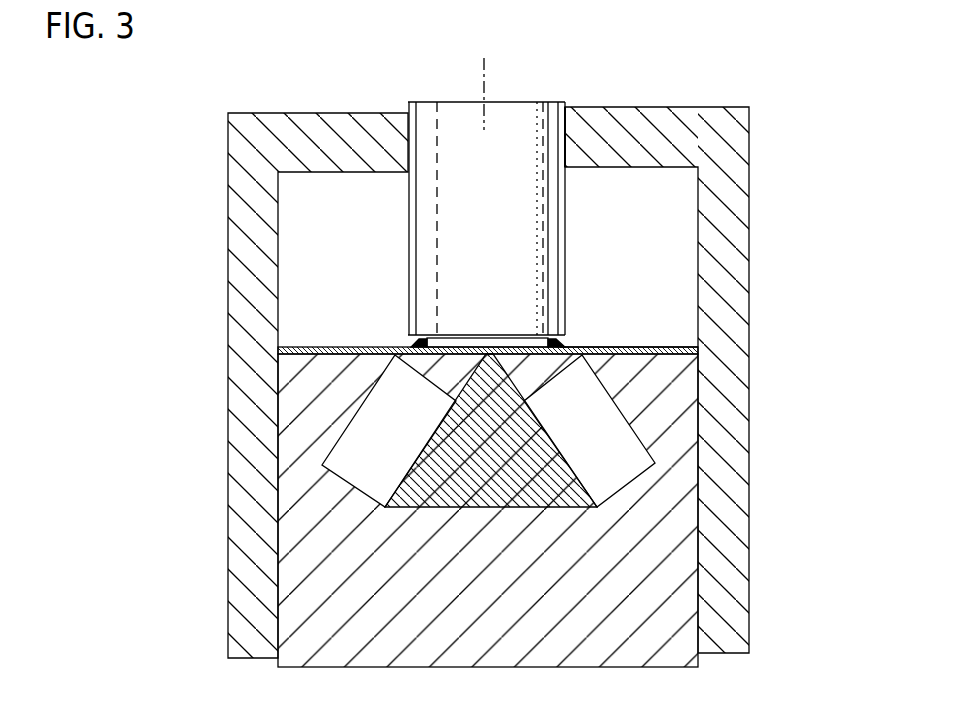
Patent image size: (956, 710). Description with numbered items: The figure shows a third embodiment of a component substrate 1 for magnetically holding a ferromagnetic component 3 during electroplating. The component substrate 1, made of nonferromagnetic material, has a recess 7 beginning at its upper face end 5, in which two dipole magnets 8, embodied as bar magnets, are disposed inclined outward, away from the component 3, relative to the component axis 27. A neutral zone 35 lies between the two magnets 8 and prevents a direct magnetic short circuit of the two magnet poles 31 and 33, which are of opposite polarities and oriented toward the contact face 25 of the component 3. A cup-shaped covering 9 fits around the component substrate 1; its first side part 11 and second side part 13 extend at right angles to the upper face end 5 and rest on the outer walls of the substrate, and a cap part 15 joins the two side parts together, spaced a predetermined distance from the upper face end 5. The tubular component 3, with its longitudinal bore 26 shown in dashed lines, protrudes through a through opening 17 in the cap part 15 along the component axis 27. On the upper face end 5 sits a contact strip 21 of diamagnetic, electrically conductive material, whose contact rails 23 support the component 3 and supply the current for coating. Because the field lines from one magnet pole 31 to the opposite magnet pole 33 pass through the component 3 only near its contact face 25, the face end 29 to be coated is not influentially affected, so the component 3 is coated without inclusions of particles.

The component substrate 1 is at (270, 548).
The component 3 is at (507, 192).
The upper face end 5 is at (645, 340).
The recess 7 is at (626, 432).
The magnet 8 is at (497, 430).
The covering 9 is at (479, 361).
The first side part 11 is at (243, 475).
The second side part 13 is at (735, 535).
The cap part 15 is at (640, 118).
The through opening 17 is at (565, 108).
The contact strip 21 is at (322, 347).
The contact rail 23 is at (425, 344).
The contact face 25 is at (500, 335).
The longitudinal bore 26 is at (446, 127).
The component axis 27 is at (486, 105).
The face end 29 is at (528, 100).
The magnet pole 31 is at (558, 399).
The magnet pole 33 is at (420, 399).
The neutral zone 35 is at (533, 446).